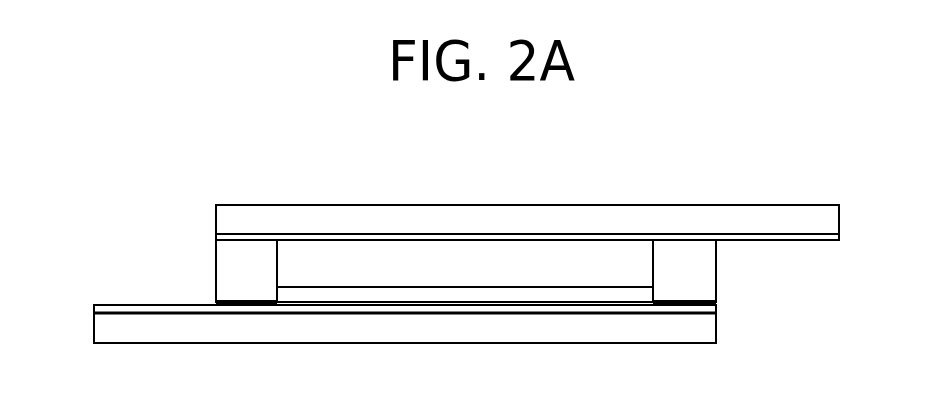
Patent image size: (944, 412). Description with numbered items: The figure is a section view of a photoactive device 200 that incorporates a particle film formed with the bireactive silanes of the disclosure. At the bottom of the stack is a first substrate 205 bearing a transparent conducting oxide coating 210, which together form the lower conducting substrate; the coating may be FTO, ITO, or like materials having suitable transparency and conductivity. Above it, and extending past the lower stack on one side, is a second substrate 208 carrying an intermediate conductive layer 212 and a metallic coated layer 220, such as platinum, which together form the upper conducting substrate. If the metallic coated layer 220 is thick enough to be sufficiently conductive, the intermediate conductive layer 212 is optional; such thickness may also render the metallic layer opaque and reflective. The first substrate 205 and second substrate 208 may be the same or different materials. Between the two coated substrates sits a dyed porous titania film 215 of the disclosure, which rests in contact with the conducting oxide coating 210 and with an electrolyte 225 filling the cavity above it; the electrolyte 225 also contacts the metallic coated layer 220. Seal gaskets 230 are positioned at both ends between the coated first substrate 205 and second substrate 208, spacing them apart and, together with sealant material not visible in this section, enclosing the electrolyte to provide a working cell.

The photoactive device 200 is at (230, 176).
The first substrate 205 is at (113, 333).
The second substrate 208 is at (737, 217).
The transparent conducting oxide coating 210 is at (140, 304).
The intermediate conductive layer 212 is at (235, 238).
The dyed porous titania film 215 is at (627, 295).
The metallic coated layer 220 is at (795, 242).
The electrolyte 225 is at (382, 272).
The seal gaskets 230 is at (258, 252).